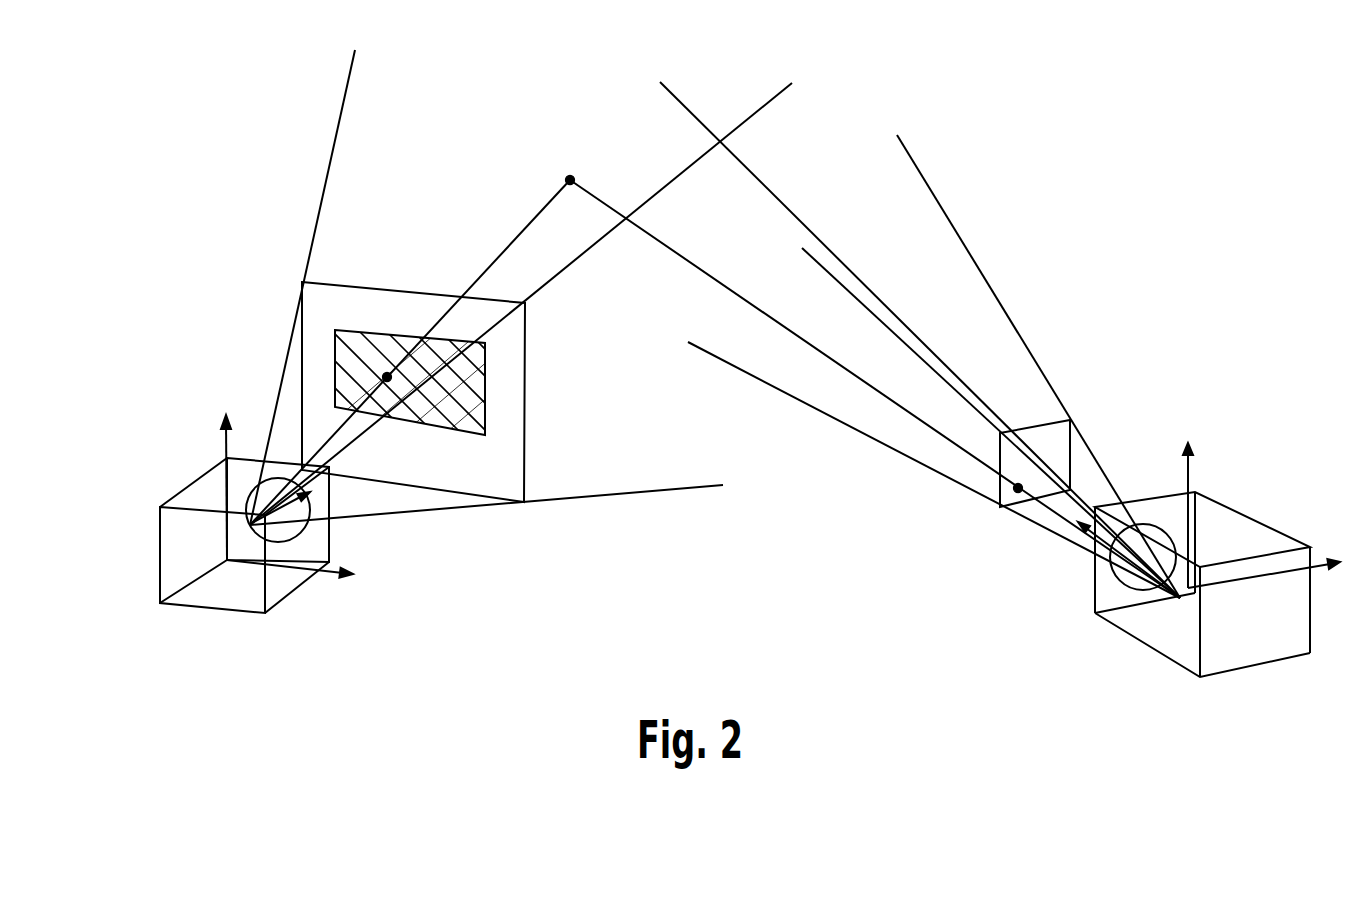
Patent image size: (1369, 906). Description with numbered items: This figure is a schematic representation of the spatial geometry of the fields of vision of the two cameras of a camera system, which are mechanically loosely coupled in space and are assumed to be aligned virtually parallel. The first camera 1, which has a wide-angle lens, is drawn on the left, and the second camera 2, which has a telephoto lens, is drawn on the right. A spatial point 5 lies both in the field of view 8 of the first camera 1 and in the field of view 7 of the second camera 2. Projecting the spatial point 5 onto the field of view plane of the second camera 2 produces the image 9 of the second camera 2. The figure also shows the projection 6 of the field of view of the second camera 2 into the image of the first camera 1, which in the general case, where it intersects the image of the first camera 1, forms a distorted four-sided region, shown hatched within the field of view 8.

The first camera 1 is at (190, 480).
The second camera 2 is at (1263, 520).
The spatial point 5 is at (570, 177).
The projection of the field of view of the second camera into the image of the first 6 is at (487, 440).
The field of view of the second camera 7 is at (1085, 397).
The field of view of the first camera 8 is at (285, 268).
The image of the second camera 9 is at (1000, 507).